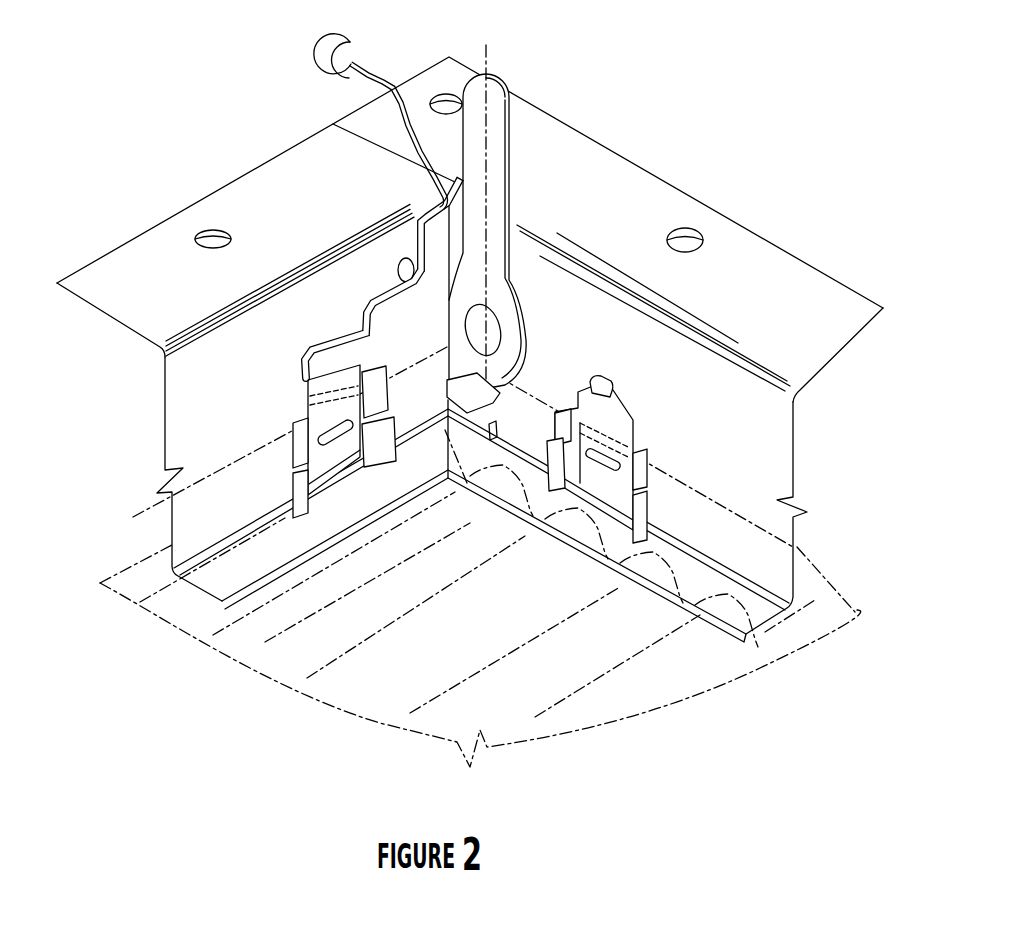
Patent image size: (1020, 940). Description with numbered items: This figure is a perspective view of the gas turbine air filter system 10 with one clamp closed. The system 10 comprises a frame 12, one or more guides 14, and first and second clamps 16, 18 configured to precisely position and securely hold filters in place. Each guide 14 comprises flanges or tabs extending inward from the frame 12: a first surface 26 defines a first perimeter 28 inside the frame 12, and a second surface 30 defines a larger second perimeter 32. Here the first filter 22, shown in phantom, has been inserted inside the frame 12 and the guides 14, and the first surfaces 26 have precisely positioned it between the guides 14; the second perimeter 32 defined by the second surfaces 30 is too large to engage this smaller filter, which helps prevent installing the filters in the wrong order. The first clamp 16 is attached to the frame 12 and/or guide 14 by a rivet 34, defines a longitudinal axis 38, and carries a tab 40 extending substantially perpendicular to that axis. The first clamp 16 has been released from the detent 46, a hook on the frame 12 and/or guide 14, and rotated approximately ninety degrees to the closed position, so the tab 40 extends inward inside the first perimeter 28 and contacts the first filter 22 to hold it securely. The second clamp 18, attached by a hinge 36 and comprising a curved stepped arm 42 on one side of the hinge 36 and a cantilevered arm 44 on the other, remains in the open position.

The gas turbine air filter system 10 is at (581, 748).
The frame 12 is at (280, 203).
The guide 14 is at (300, 407).
The first clamp 16 is at (513, 207).
The second clamp 18 is at (407, 110).
The first filter 22 is at (186, 476).
The first surface 26 is at (297, 497).
The first perimeter 28 is at (695, 603).
The second surface 30 is at (297, 441).
The second perimeter 32 is at (753, 527).
The rivet 34 is at (500, 313).
The hinge 36 is at (362, 333).
The longitudinal axis 38 is at (488, 153).
The tab 40 is at (467, 398).
The stepped arm 42 is at (390, 293).
The cantilevered arm 44 is at (327, 337).
The detent 46 is at (610, 377).